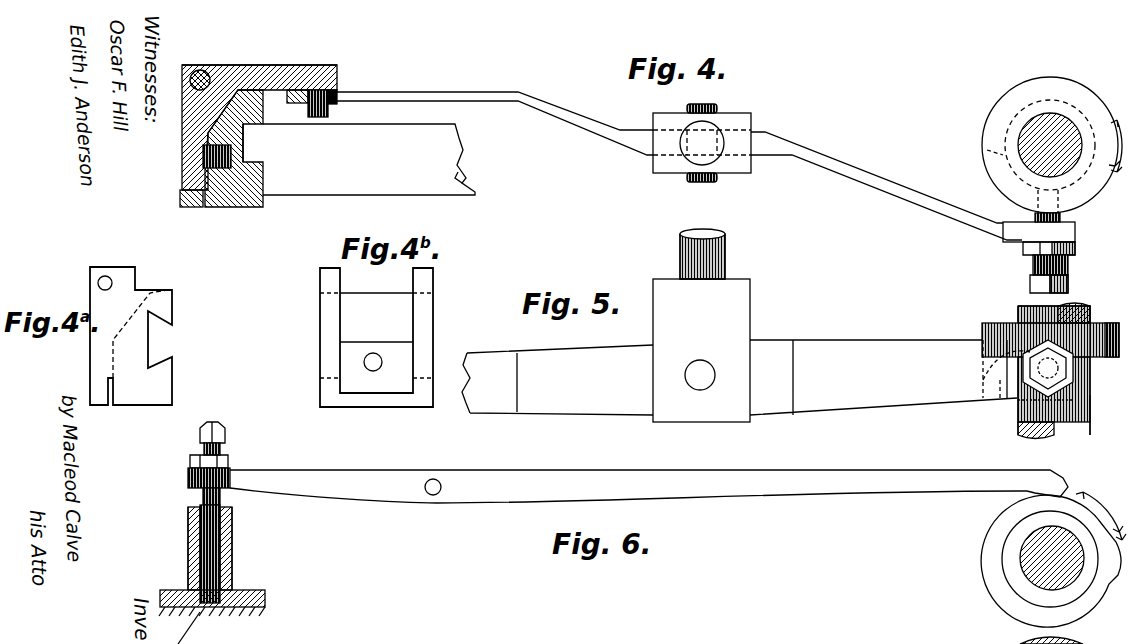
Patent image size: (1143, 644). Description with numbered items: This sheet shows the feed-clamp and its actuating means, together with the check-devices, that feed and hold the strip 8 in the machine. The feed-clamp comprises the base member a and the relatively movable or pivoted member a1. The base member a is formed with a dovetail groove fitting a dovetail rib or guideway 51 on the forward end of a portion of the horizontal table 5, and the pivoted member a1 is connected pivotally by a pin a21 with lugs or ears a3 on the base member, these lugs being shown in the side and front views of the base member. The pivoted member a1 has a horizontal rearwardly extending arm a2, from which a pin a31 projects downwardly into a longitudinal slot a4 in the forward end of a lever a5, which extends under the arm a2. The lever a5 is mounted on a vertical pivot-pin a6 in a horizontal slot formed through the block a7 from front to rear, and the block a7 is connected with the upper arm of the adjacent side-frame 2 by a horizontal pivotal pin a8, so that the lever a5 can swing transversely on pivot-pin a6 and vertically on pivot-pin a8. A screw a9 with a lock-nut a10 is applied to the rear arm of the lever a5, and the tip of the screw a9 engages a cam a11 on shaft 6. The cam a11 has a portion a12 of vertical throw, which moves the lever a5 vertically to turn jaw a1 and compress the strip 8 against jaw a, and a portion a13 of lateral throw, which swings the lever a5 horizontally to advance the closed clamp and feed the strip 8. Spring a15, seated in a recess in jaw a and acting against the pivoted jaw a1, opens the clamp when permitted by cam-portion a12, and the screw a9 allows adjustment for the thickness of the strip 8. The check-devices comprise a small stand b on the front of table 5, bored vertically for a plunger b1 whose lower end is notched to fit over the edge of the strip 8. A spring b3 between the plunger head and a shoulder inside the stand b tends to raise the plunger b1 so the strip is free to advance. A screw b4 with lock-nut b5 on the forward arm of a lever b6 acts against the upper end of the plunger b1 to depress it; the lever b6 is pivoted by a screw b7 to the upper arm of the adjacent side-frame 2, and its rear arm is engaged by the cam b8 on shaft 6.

In FIG. 4, the pivoted member a1 is at (184, 152).
In FIG. 4, the horizontal rearwardly extending arm a2 is at (282, 68).
In FIG. 4, the pin a21 is at (201, 70).
In FIG. 4A, the lugs or ears a3 is at (105, 266).
In FIG. 4B, the lugs or ears a3 is at (323, 268).
In FIG. 4, the pin a31 is at (330, 115).
In FIG. 4, the longitudinal slot a4 is at (338, 92).
In FIG. 4, the lever a5 is at (500, 88).
In FIG. 5, the lever a5 is at (850, 344).
In FIG. 4, the vertical pivot-pin a6 is at (713, 103).
In FIG. 5, the vertical pivot-pin a6 is at (698, 396).
In FIG. 4, the block a7 is at (745, 183).
In FIG. 5, the block a7 is at (750, 310).
In FIG. 4, the horizontal pivotal pin a8 is at (690, 184).
In FIG. 5, the horizontal pivotal pin a8 is at (733, 263).
In FIG. 4, the screw a9 is at (1027, 269).
In FIG. 5, the screw a9 is at (1090, 405).
In FIG. 4, the lock-nut a10 is at (1083, 248).
In FIG. 5, the lock-nut a10 is at (1028, 395).
In FIG. 4, the cam a11 is at (984, 102).
In FIG. 5, the cam a11 is at (987, 315).
In FIG. 4, the cam portion of vertical throw a12 is at (1068, 196).
In FIG. 5, the cam portion of lateral throw a13 is at (983, 385).
In FIG. 4, the spring a15 is at (184, 186).
In FIG. 4, the base member a is at (249, 198).
In FIG. 4A, the base member a is at (163, 373).
In FIG. 4B, the base member a is at (352, 388).
In FIG. 4, the horizontal table 5 is at (468, 183).
In FIG. 4, the dovetail rib or guideway 51 is at (259, 150).
In FIG. 4, the shaft 6 is at (1059, 110).
In FIG. 5, the shaft 6 is at (1075, 305).
In FIG. 6, the shaft 6 is at (1013, 561).
In FIG. 4, the strip 8 is at (221, 200).
In FIG. 6, the stand b is at (182, 561).
In FIG. 6, the plunger b1 is at (197, 511).
In FIG. 6, the spring b3 is at (226, 530).
In FIG. 6, the screw b4 is at (222, 446).
In FIG. 6, the lock-nut b5 is at (187, 451).
In FIG. 6, the lever b6 is at (369, 467).
In FIG. 6, the screw b7 is at (438, 481).
In FIG. 6, the cam b8 is at (976, 532).
In FIG. 6, the side-frame 2 is at (222, 608).